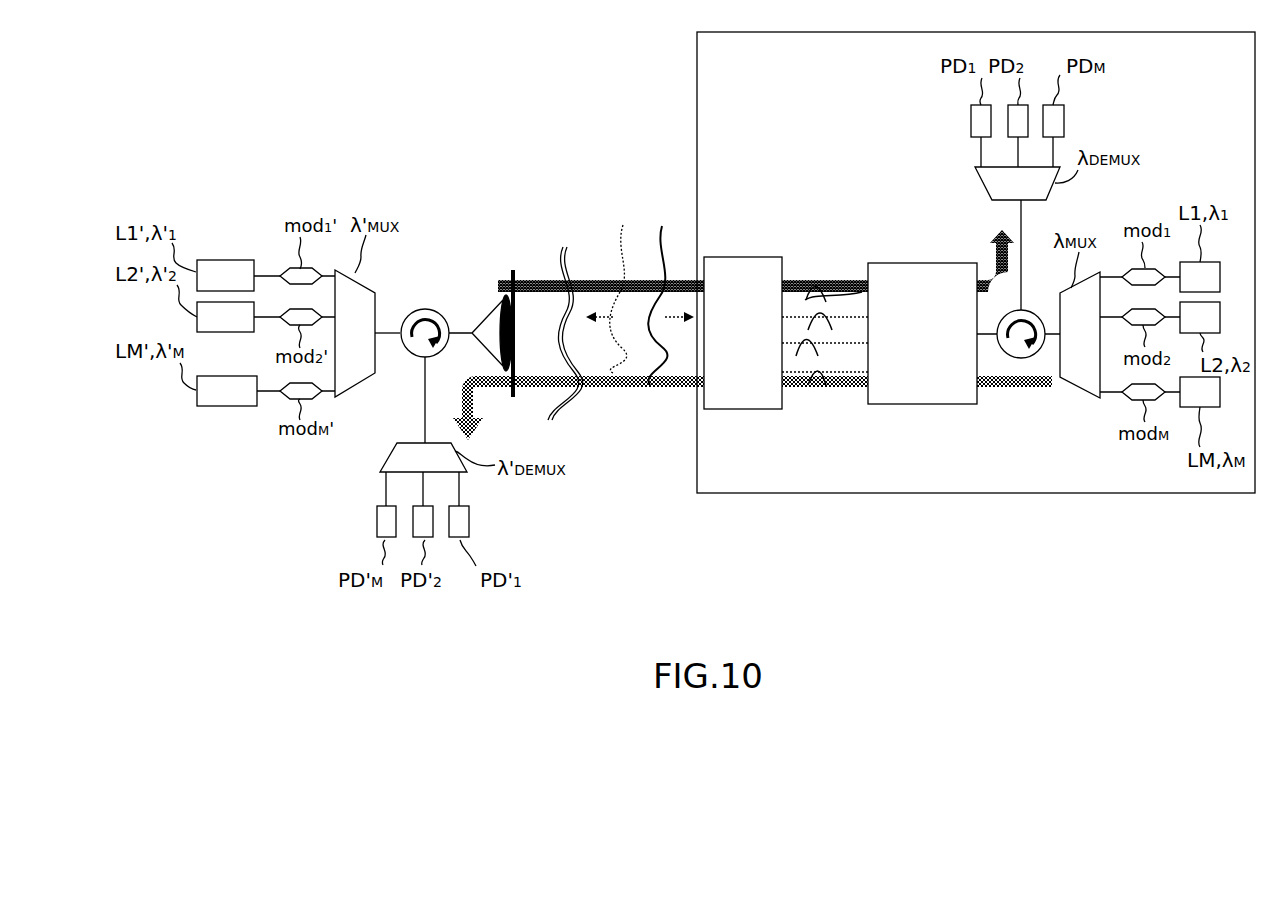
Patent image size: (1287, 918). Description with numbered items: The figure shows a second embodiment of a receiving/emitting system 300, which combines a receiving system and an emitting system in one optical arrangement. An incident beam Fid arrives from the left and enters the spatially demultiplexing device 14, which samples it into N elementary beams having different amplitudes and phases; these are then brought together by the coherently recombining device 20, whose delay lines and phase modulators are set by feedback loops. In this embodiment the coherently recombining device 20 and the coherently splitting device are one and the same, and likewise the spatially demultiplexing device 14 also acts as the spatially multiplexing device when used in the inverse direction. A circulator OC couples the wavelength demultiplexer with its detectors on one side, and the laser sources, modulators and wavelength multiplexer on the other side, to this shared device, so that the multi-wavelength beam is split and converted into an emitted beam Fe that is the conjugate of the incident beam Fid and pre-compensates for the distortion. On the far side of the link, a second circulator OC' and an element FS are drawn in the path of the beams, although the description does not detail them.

The spatially demultiplexing device 14 is at (737, 257).
The coherently recombining device 20 is at (900, 263).
The receiving/emitting system 300 is at (958, 495).
The fiber stretcher FS is at (542, 296).
The circulator OC is at (1021, 375).
The optical circulator OC' is at (428, 301).
The emitted beam Fe is at (609, 286).
The incident beam Fid is at (671, 292).